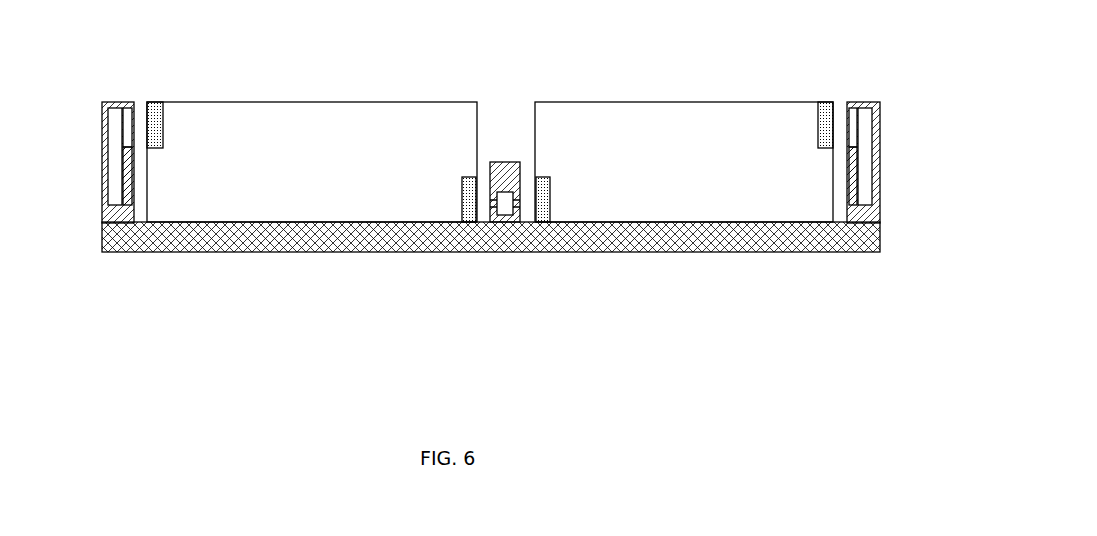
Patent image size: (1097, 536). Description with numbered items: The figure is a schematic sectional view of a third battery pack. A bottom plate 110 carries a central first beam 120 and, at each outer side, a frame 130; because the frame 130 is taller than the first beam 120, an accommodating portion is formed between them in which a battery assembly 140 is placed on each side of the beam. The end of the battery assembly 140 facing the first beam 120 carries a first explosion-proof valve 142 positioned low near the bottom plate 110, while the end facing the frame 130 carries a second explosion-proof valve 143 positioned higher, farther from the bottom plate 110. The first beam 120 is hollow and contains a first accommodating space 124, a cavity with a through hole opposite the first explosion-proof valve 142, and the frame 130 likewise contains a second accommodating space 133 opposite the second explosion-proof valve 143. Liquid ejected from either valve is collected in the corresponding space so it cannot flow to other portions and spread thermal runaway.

The bottom plate 110 is at (310, 238).
The first beam 120 is at (505, 177).
The first accommodating space 124 is at (505, 208).
The frame 130 is at (102, 162).
The second accommodating space 133 is at (120, 192).
The battery assembly 140 is at (297, 132).
The first explosion-proof valve 142 is at (467, 207).
The second explosion-proof valve 143 is at (153, 112).